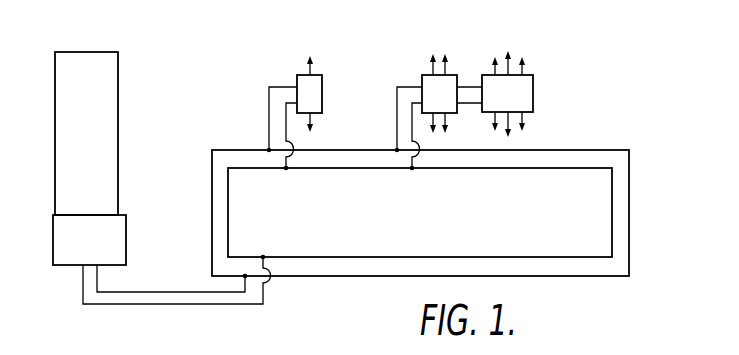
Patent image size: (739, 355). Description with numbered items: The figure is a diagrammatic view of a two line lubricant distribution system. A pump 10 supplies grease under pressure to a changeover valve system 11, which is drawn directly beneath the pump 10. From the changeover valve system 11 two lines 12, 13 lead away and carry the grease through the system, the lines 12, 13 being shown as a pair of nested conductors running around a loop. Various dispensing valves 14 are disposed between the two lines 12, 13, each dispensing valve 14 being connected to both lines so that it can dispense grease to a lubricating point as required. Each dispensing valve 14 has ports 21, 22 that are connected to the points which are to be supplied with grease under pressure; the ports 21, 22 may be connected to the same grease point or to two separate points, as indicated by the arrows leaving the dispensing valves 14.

The pump 10 is at (105, 125).
The changeover valve system 11 is at (139, 235).
The line 12 is at (182, 290).
The line 13 is at (183, 305).
The dispensing valve 14 is at (432, 83).
The port 21 is at (315, 68).
The port 22 is at (317, 117).